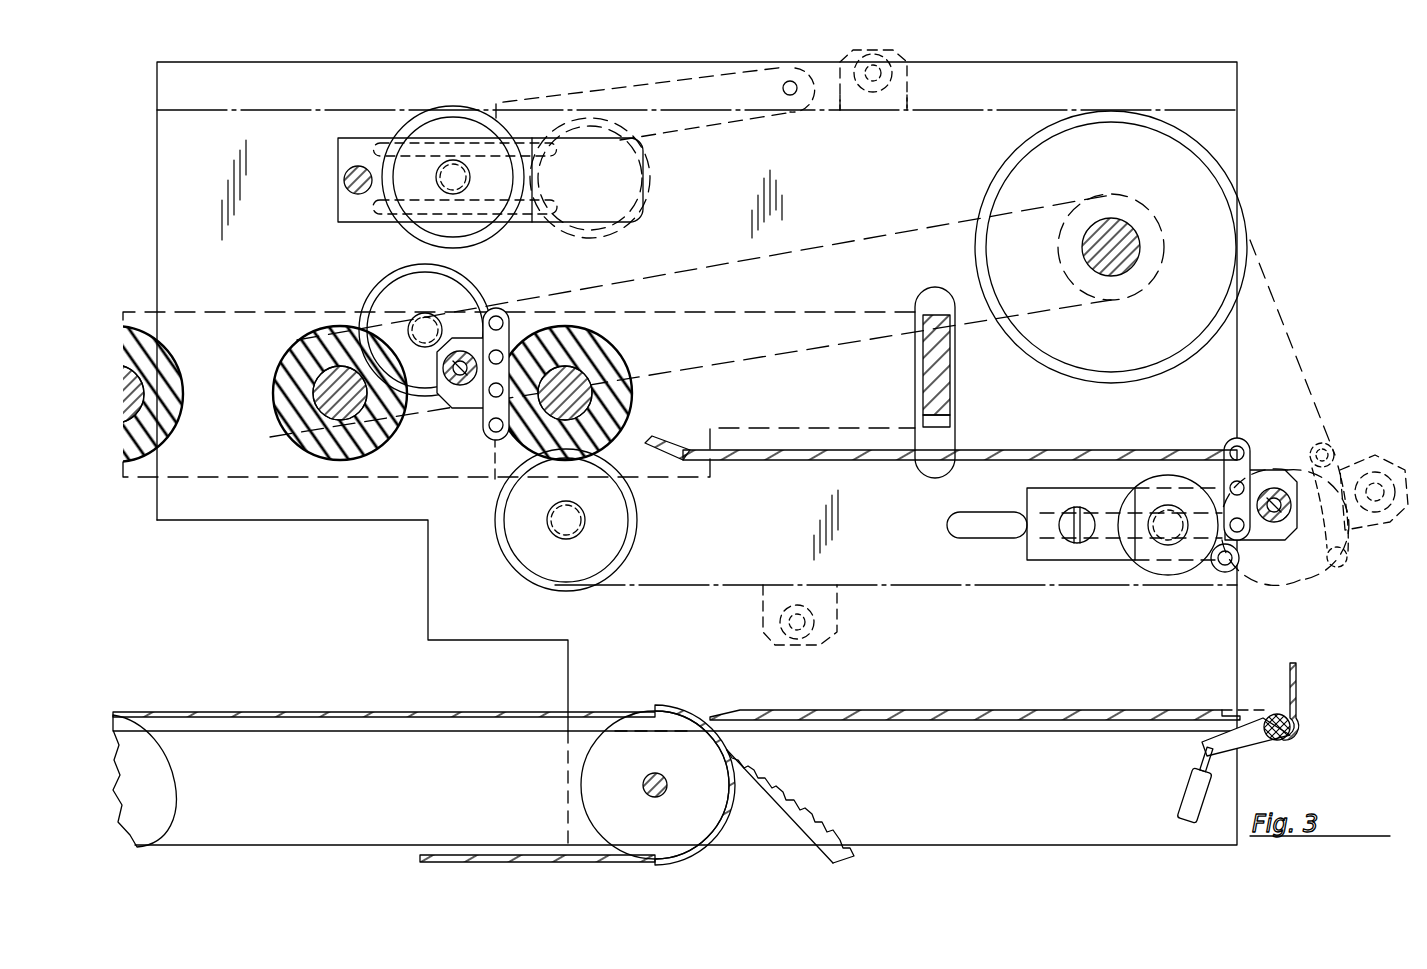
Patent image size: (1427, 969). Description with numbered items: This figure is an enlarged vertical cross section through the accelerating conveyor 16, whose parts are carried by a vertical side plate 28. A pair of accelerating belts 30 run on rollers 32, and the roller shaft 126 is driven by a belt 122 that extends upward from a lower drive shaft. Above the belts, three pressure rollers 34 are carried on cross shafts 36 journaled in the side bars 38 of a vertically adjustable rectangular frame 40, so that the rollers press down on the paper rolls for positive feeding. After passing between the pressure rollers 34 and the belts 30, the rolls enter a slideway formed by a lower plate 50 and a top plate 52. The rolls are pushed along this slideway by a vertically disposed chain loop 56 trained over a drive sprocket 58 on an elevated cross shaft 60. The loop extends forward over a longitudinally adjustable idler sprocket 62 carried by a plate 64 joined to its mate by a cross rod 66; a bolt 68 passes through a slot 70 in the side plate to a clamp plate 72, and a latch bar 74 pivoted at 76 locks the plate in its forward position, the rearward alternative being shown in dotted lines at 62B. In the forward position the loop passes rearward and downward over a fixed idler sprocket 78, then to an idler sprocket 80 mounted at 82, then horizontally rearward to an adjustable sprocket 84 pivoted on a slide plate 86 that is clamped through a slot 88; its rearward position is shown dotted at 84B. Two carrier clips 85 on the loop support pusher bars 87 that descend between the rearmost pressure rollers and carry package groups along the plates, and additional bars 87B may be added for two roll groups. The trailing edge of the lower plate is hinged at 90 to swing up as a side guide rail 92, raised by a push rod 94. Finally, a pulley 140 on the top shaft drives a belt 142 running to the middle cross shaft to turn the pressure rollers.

The accelerating conveyor 16 is at (372, 538).
The side plate 28 is at (1222, 132).
The accelerating belt 30 is at (348, 713).
The roller 32 is at (130, 728).
The pressure roller 34 is at (163, 425).
The cross shaft 36 is at (320, 397).
The side bar 38 is at (780, 312).
The rectangular frame 40 is at (930, 330).
The lower plate 50 is at (875, 715).
The top plate 52 is at (765, 455).
The chain loop 56 is at (1003, 110).
The drive sprocket 58 is at (1200, 190).
The cross shaft 60 is at (1140, 247).
The idler sprocket 62 is at (420, 130).
The rearwardly displaced position of idler sprocket 62B is at (655, 181).
The plate 64 is at (365, 143).
The cross rod 66 is at (352, 175).
The bolt 68 is at (453, 160).
The slot 70 is at (545, 206).
The clamp plate 72 is at (533, 180).
The latch bar 74 is at (650, 82).
The pivot 76 is at (790, 81).
The fixed idler sprocket 78 is at (385, 300).
The idler sprocket 80 is at (520, 535).
The mounting 82 is at (560, 530).
The adjustable sprocket 84 is at (1165, 480).
The rearward position of adjustable sprocket 84B is at (1310, 580).
The carrier clip 85 is at (915, 98).
The slide plate 86 is at (1070, 500).
The pusher bar 87 is at (457, 380).
The additional pusher bar 87B is at (887, 57).
The slot 88 is at (985, 520).
The hinge 90 is at (1285, 735).
The side guide rail 92 is at (1297, 690).
The push rod 94 is at (1198, 785).
The belt 122 is at (795, 828).
The shaft 126 is at (642, 785).
The pulley 140 is at (1128, 200).
The belt 142 is at (878, 240).